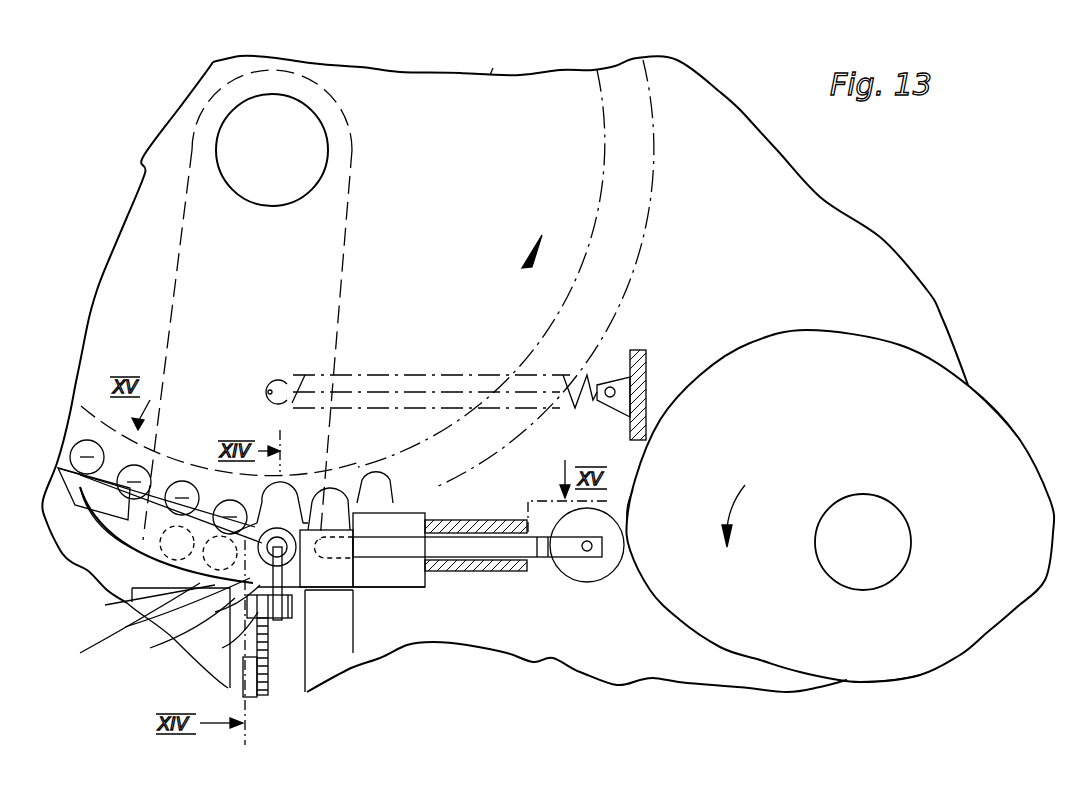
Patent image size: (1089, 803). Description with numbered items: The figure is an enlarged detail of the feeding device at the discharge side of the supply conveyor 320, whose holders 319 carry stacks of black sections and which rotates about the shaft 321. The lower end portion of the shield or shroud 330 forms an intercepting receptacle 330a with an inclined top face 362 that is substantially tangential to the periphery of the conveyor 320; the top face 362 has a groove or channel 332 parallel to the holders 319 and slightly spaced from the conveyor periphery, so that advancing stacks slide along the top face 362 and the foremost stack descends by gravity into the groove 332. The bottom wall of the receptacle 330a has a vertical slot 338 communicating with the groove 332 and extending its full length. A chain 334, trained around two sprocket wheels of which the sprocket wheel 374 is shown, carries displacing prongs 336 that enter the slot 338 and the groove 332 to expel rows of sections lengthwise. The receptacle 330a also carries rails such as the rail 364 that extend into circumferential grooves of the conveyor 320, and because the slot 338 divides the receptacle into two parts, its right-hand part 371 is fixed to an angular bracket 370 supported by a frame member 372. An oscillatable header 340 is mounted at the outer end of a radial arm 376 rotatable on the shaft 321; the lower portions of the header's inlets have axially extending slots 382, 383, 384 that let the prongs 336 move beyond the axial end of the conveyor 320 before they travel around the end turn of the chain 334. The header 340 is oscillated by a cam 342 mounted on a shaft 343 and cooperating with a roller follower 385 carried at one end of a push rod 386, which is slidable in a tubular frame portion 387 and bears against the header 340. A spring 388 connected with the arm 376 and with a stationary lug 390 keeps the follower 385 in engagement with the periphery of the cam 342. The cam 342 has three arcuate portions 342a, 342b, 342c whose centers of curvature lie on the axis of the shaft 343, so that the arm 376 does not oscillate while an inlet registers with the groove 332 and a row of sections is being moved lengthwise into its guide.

The supply conveyor 320 is at (477, 63).
The shaft 321 is at (322, 168).
The frame member 372 is at (780, 163).
The radial arm 376 is at (180, 310).
The holders 319 is at (375, 478).
The shield 330 is at (153, 505).
The intercepting receptacle 330a is at (105, 528).
The inclined top face 362 is at (130, 550).
The rail 364 is at (345, 518).
The right-hand part of receptacle 371 is at (353, 571).
The groove 332 is at (330, 597).
The displacing prongs 336 is at (285, 607).
The sprocket wheel 374 is at (268, 666).
The angular bracket 370 is at (349, 663).
The axially extending slot 382 is at (145, 600).
The axially extending slot 383 is at (172, 608).
The axially extending slot 384 is at (175, 629).
The oscillatable header 340 is at (124, 624).
The vertical slot 338 is at (220, 604).
The chain 334 is at (222, 636).
The push rod 386 is at (530, 562).
The bushing 387 is at (447, 574).
The roller follower 385 is at (606, 570).
The spring 388 is at (598, 420).
The stationary lug 390 is at (632, 345).
The cam 342 is at (1015, 606).
The arcuate portion 342a is at (628, 508).
The arcuate portion 342b is at (992, 417).
The arcuate portion 342c is at (907, 680).
The shaft 343 is at (897, 543).